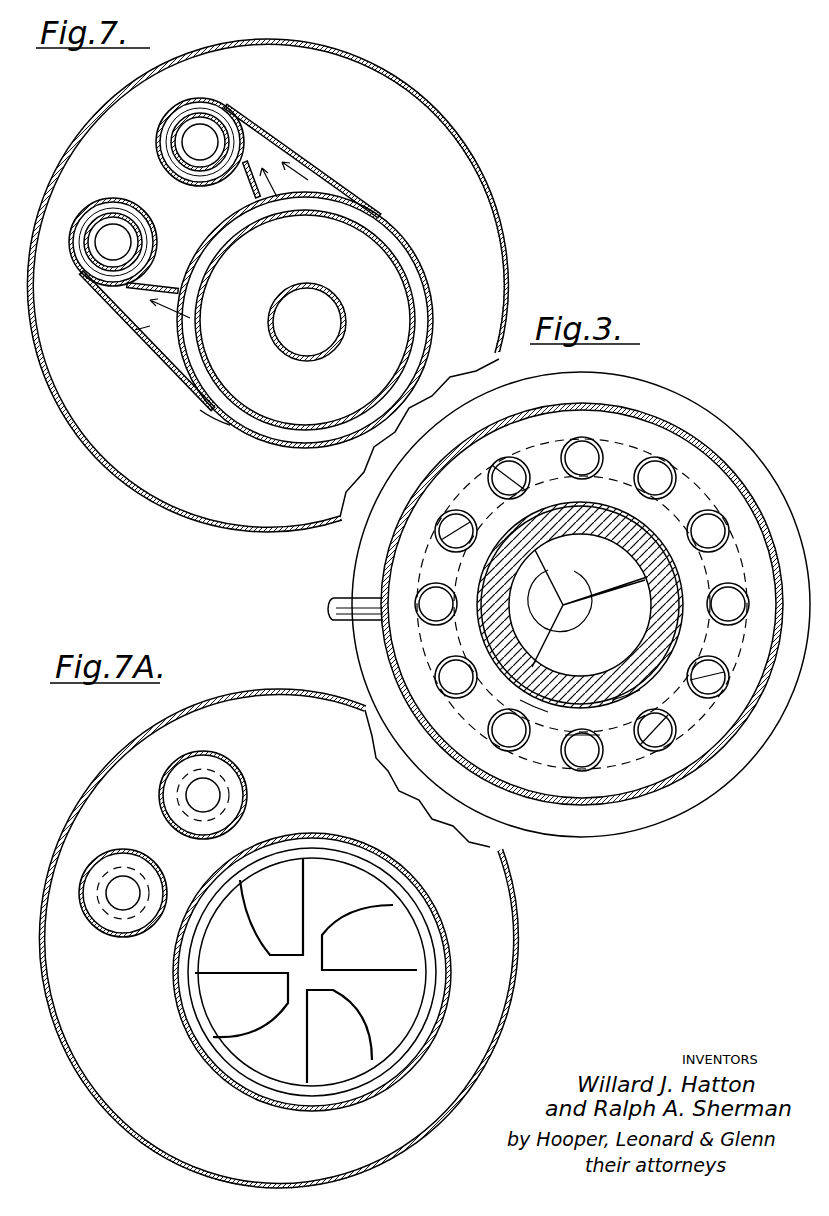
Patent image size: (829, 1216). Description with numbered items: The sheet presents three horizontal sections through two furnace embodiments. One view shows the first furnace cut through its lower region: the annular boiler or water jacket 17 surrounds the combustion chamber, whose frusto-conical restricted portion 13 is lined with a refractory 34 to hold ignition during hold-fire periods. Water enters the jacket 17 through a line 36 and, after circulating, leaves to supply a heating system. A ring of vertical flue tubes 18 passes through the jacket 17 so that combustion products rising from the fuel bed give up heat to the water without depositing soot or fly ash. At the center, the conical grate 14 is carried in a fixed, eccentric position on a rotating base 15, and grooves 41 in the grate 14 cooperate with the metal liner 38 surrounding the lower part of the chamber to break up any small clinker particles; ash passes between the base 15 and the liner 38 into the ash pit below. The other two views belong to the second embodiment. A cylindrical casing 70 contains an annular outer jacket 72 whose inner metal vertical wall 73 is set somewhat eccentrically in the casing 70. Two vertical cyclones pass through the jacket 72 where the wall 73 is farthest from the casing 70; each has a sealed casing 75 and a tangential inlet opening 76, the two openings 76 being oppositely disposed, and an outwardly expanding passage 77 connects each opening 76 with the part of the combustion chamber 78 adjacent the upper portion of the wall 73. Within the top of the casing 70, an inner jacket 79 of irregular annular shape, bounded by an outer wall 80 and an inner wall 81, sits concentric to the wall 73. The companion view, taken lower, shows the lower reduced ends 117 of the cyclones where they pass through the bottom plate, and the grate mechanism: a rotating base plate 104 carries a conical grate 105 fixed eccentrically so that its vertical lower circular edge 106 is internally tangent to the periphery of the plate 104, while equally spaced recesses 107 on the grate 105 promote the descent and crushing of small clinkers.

In FIG. 7, the cylindrical casing 70 is at (414, 96).
In FIG. 7A, the cylindrical casing 70 is at (122, 760).
In FIG. 7, the outer jacket 72 is at (465, 158).
In FIG. 7A, the outer jacket 72 is at (514, 948).
In FIG. 7, the inner metal vertical wall 73 is at (422, 252).
In FIG. 7A, the inner metal vertical wall 73 is at (450, 933).
In FIG. 7, the cyclone casing 75 is at (167, 147).
In FIG. 7A, the cyclone casing 75 is at (145, 818).
In FIG. 7, the tangential inlet opening 76 is at (248, 125).
In FIG. 7, the outwardly expanding passage 77 is at (280, 126).
In FIG. 7, the combustion chamber 78 is at (240, 408).
In FIG. 7, the inner jacket 79 is at (425, 310).
In FIG. 7, the outer wall 80 is at (408, 335).
In FIG. 7, the inner wall 81 is at (283, 358).
In FIG. 3, the restricted portion 13 is at (538, 700).
In FIG. 3, the conical grate 14 is at (583, 840).
In FIG. 3, the rotating base 15 is at (608, 465).
In FIG. 3, the annular boiler or water jacket 17 is at (745, 740).
In FIG. 3, the flue tubes 18 is at (705, 512).
In FIG. 3, the refractory 34 is at (620, 700).
In FIG. 3, the water inlet line 36 is at (336, 622).
In FIG. 3, the metal liner 38 is at (700, 800).
In FIG. 3, the grooves 41 is at (556, 590).
In FIG. 7A, the rotating base plate 104 is at (430, 980).
In FIG. 7A, the conical grate 105 is at (353, 887).
In FIG. 7A, the lower circular edge 106 is at (195, 985).
In FIG. 7A, the recesses 107 is at (320, 1042).
In FIG. 7A, the lower reduced ends 117 is at (198, 820).